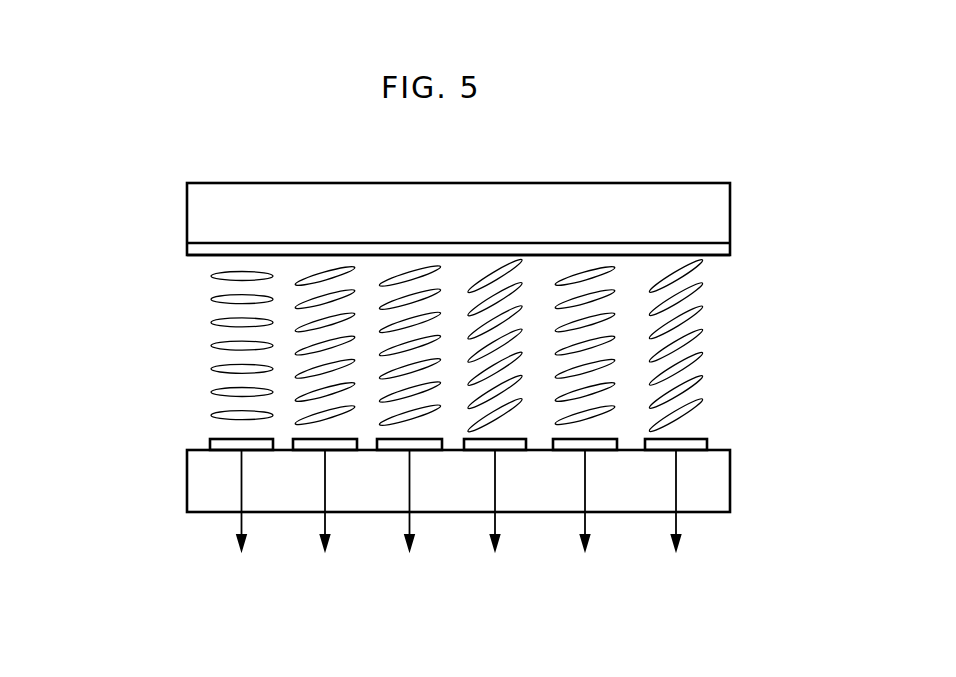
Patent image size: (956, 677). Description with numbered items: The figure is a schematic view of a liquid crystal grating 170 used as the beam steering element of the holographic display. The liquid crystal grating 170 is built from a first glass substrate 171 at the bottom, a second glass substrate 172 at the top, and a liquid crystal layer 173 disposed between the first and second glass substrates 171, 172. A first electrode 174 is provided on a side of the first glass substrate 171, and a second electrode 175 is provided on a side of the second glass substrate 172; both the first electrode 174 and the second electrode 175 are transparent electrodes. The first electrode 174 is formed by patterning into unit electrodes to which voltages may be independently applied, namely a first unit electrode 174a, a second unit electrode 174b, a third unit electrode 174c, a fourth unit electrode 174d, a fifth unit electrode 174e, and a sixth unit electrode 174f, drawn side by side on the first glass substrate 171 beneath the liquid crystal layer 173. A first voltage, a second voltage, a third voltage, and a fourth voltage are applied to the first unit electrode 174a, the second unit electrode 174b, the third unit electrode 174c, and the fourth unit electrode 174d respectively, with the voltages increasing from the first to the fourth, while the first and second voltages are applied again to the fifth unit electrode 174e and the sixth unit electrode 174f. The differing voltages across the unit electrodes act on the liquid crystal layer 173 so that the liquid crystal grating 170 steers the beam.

The liquid crystal grating 170 is at (114, 214).
The first glass substrate 171 is at (723, 482).
The second glass substrate 172 is at (727, 209).
The liquid crystal layer 173 is at (712, 296).
The first electrode 174 is at (717, 442).
The first unit electrode 174a is at (210, 440).
The second unit electrode 174b is at (295, 439).
The third unit electrode 174c is at (378, 438).
The fourth unit electrode 174d is at (517, 440).
The fifth unit electrode 174e is at (612, 440).
The sixth unit electrode 174f is at (699, 440).
The second electrode 175 is at (727, 249).